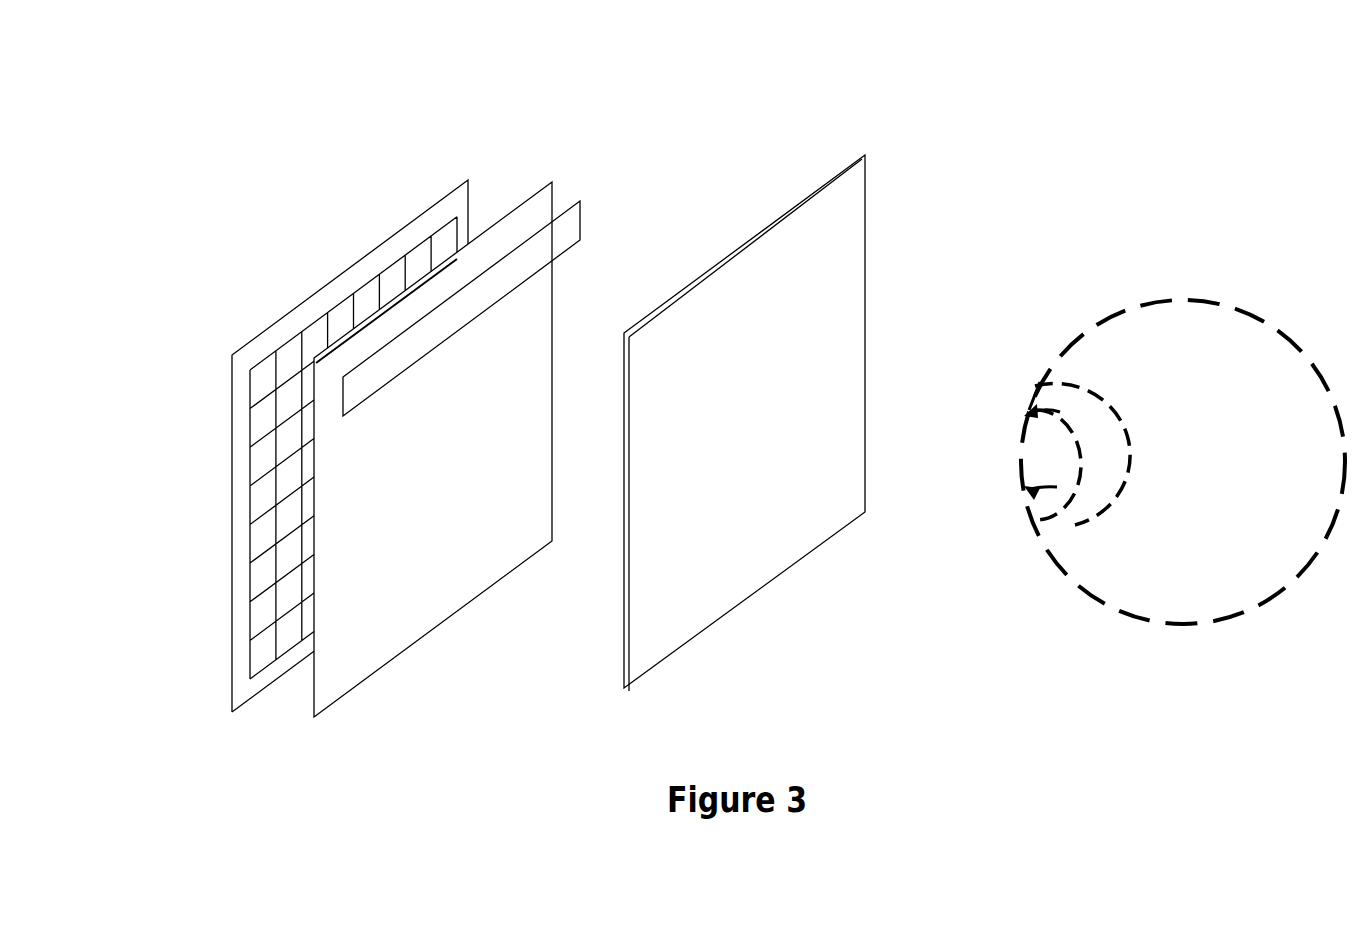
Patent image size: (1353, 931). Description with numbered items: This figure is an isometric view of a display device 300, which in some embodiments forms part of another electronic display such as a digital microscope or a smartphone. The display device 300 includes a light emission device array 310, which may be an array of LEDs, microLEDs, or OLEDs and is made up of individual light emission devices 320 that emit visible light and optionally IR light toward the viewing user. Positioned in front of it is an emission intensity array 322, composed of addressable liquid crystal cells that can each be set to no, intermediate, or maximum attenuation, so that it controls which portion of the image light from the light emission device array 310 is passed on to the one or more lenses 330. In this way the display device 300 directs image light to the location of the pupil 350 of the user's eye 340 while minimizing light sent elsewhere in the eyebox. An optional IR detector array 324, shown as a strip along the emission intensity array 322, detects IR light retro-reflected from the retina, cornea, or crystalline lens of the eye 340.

The display device 300 is at (240, 72).
The light emission device array 310 is at (232, 505).
The light emission devices 320 is at (363, 282).
The emission intensity array 322 is at (538, 190).
The IR detector array 324 is at (577, 203).
The lenses 330 is at (793, 207).
The eye 340 is at (1182, 298).
The pupil 350 is at (1024, 490).